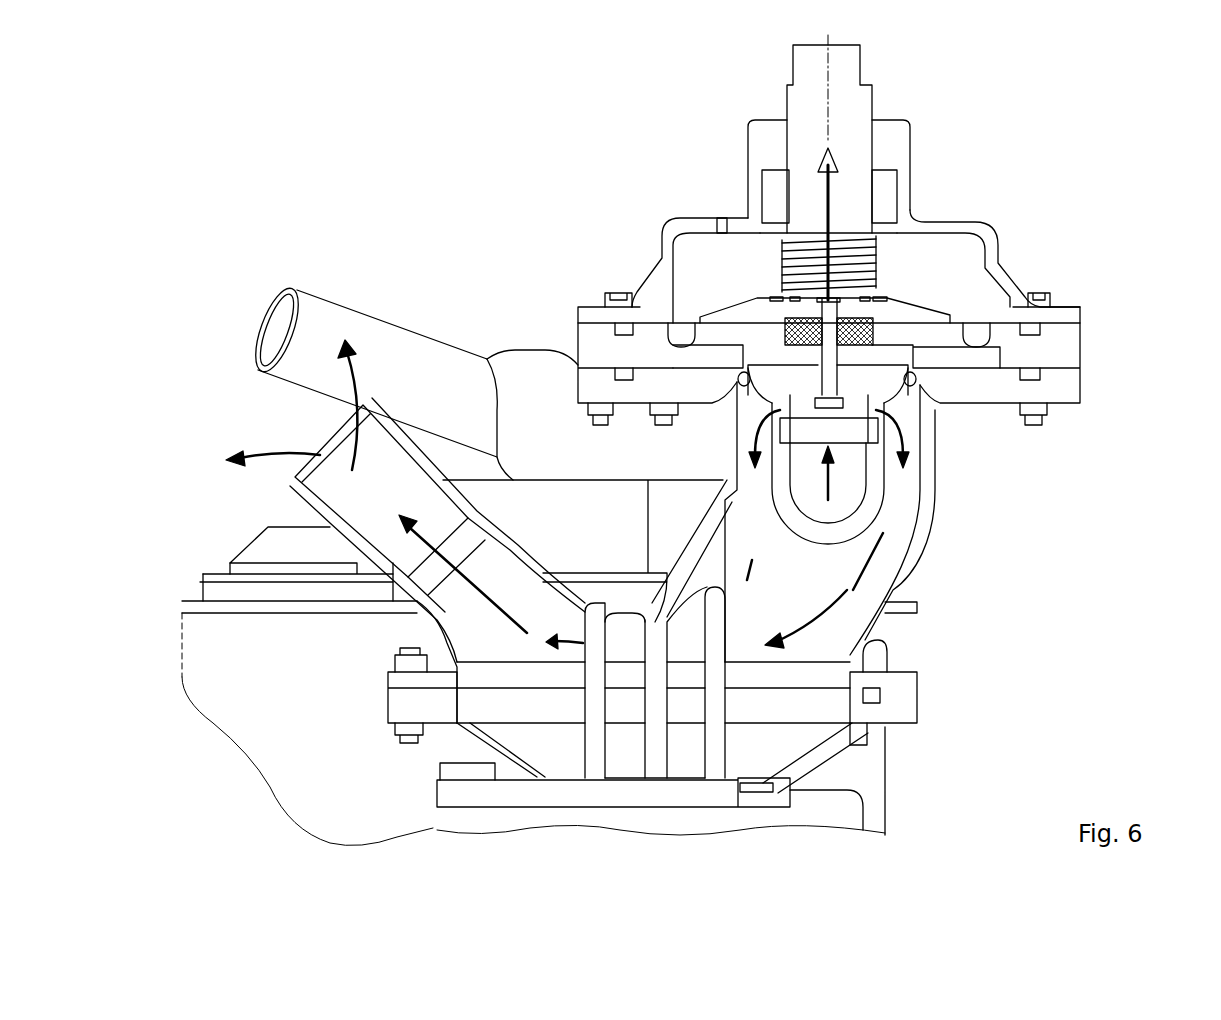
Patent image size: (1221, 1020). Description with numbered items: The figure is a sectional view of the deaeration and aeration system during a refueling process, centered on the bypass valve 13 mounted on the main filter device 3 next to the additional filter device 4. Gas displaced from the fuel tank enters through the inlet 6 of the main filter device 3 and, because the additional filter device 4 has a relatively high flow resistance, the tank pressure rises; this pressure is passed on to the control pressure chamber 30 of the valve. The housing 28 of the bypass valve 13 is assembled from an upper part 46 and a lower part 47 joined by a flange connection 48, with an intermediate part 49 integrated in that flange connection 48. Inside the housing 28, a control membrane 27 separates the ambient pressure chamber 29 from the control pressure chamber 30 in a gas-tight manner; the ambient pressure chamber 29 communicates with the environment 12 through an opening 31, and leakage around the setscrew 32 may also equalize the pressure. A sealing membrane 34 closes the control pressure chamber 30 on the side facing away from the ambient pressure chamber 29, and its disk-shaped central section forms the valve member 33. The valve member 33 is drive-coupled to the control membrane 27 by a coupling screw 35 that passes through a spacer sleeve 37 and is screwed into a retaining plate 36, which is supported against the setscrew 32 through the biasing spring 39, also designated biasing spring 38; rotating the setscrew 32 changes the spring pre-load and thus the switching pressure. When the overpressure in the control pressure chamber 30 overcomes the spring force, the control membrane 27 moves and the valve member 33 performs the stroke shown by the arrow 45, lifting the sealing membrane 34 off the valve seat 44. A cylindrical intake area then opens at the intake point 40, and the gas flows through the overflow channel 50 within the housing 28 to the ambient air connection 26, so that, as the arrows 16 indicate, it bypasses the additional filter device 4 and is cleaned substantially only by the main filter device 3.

The main filter device 3 is at (233, 688).
The additional filter device 4 is at (604, 806).
The inlet 6 is at (275, 328).
The environment 12 is at (648, 160).
The bypass valve 13 is at (912, 172).
The arrows 16 is at (285, 440).
The ambient air connection 26 is at (310, 500).
The control membrane 27 is at (612, 300).
The housing 28 is at (910, 120).
The ambient pressure chamber 29 is at (737, 286).
The control pressure chamber 30 is at (668, 312).
The opening 31 is at (722, 217).
The setscrew 32 is at (790, 70).
The valve member 33 is at (757, 470).
The sealing membrane 34 is at (930, 440).
The coupling screw 35 is at (980, 300).
The retaining plate 36 is at (922, 312).
The spacer sleeve 37 is at (937, 395).
The biasing spring 38 is at (955, 300).
The biasing spring 39 is at (878, 250).
The intake point 40 is at (910, 510).
The valve seat 44 is at (578, 318).
The arrow 45 is at (775, 130).
The upper part 46 is at (1070, 307).
The lower part 47 is at (1047, 412).
The flange connection 48 is at (1100, 336).
The intermediate part 49 is at (1080, 350).
The overflow channel 50 is at (798, 591).